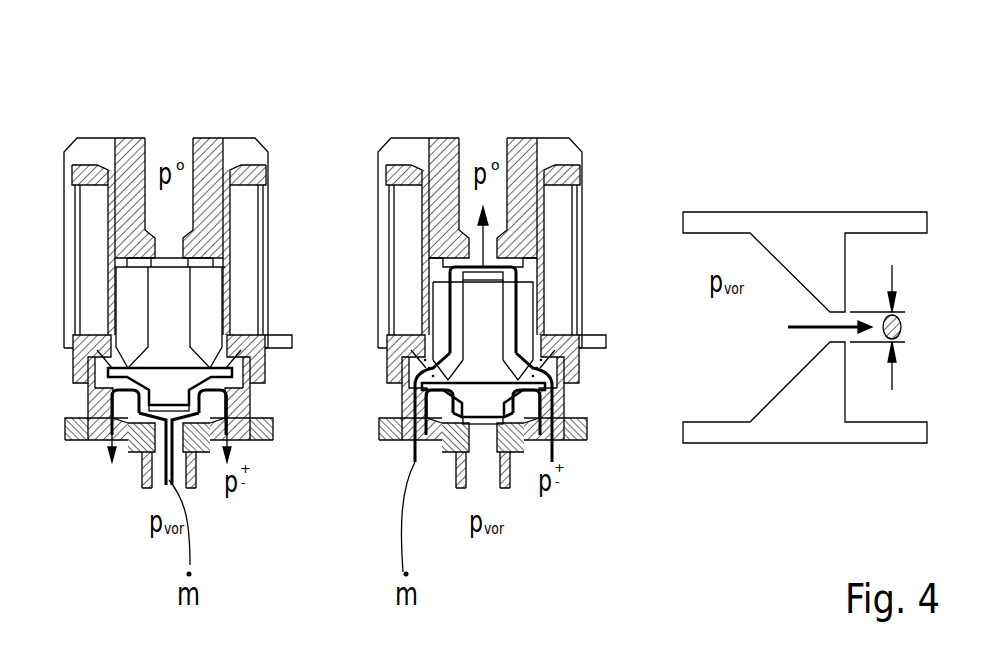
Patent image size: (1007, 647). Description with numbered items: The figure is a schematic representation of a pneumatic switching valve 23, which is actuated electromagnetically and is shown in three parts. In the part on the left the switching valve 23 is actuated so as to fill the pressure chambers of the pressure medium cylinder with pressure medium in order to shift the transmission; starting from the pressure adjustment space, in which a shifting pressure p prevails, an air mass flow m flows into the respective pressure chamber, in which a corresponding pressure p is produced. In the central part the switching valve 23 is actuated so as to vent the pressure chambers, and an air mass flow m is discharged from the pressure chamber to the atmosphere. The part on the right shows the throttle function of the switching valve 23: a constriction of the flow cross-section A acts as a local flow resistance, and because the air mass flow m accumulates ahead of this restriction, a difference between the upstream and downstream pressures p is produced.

The switching valve 23 is at (64, 215).
The flow cross-section area A is at (895, 330).
The air mass flow m is at (815, 323).
The pressure p is at (912, 317).